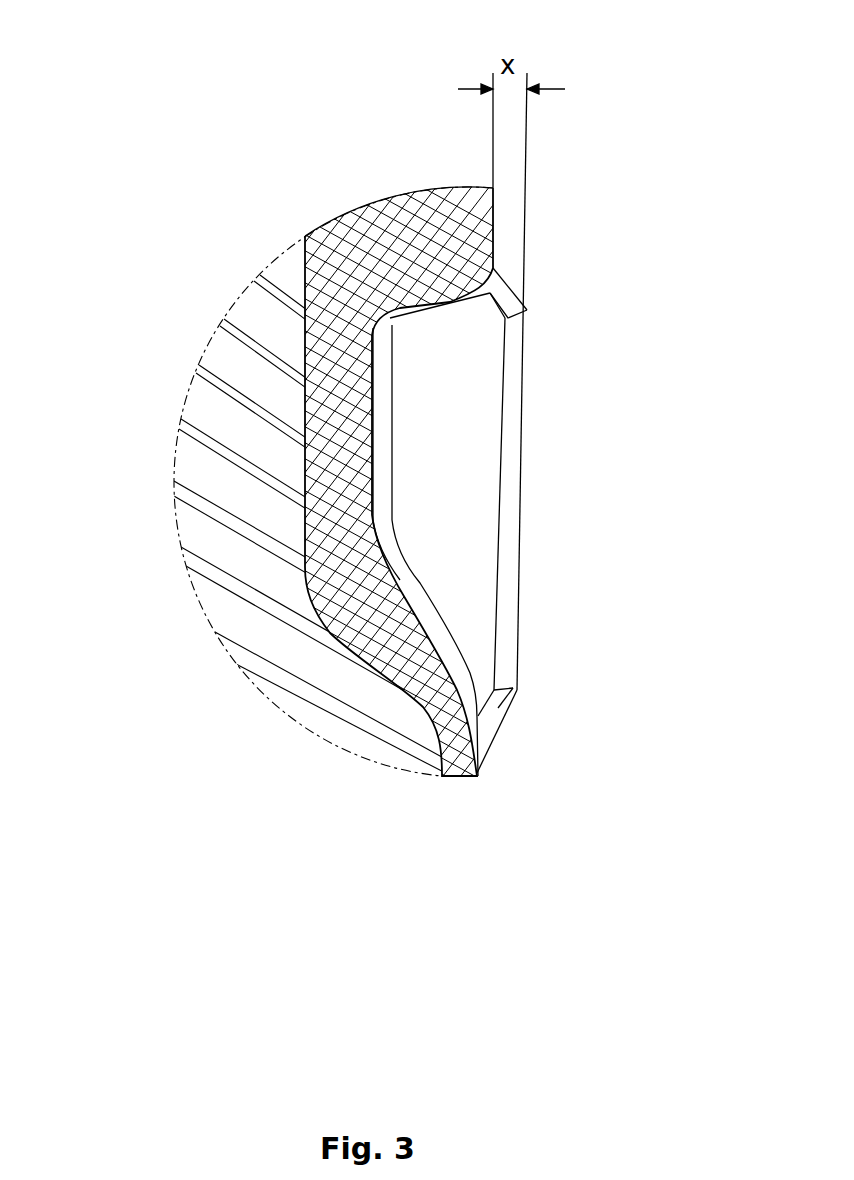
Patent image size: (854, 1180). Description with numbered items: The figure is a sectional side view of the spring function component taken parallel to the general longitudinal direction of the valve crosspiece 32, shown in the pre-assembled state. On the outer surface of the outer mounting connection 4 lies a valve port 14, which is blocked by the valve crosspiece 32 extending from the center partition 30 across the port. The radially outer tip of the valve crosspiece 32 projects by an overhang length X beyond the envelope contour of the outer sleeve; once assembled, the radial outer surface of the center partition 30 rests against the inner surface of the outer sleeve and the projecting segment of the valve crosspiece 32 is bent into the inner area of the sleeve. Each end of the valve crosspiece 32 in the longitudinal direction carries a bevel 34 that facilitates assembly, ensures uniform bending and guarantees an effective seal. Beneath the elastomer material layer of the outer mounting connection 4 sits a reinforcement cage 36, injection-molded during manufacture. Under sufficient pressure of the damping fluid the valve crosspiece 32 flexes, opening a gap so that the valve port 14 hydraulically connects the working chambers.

The outer mounting connection 4 is at (622, 353).
The valve port 14 is at (414, 428).
The center partition 30 is at (427, 235).
The valve crosspiece 32 is at (478, 610).
The bevel 34 is at (505, 301).
The reinforcement cage 36 is at (213, 479).